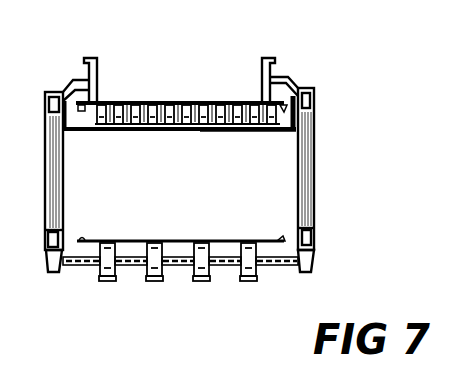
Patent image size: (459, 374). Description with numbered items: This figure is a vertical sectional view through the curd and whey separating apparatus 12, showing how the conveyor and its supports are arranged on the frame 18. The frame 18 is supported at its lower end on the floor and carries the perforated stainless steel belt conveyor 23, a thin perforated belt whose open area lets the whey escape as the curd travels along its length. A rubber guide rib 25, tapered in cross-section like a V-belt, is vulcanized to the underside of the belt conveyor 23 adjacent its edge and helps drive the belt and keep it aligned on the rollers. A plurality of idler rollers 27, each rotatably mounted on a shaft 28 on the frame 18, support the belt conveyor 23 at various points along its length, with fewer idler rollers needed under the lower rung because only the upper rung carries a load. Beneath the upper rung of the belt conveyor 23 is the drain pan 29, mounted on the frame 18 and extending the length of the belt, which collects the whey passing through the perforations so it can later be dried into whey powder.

The curd and whey separating apparatus 12 is at (180, 140).
The frame 18 is at (315, 138).
The perforated stainless steel belt conveyor 23 is at (181, 139).
The rubber guide rib 25 is at (283, 105).
The idler rollers 27 is at (188, 131).
The shaft 28 is at (252, 131).
The drain pan 29 is at (291, 86).